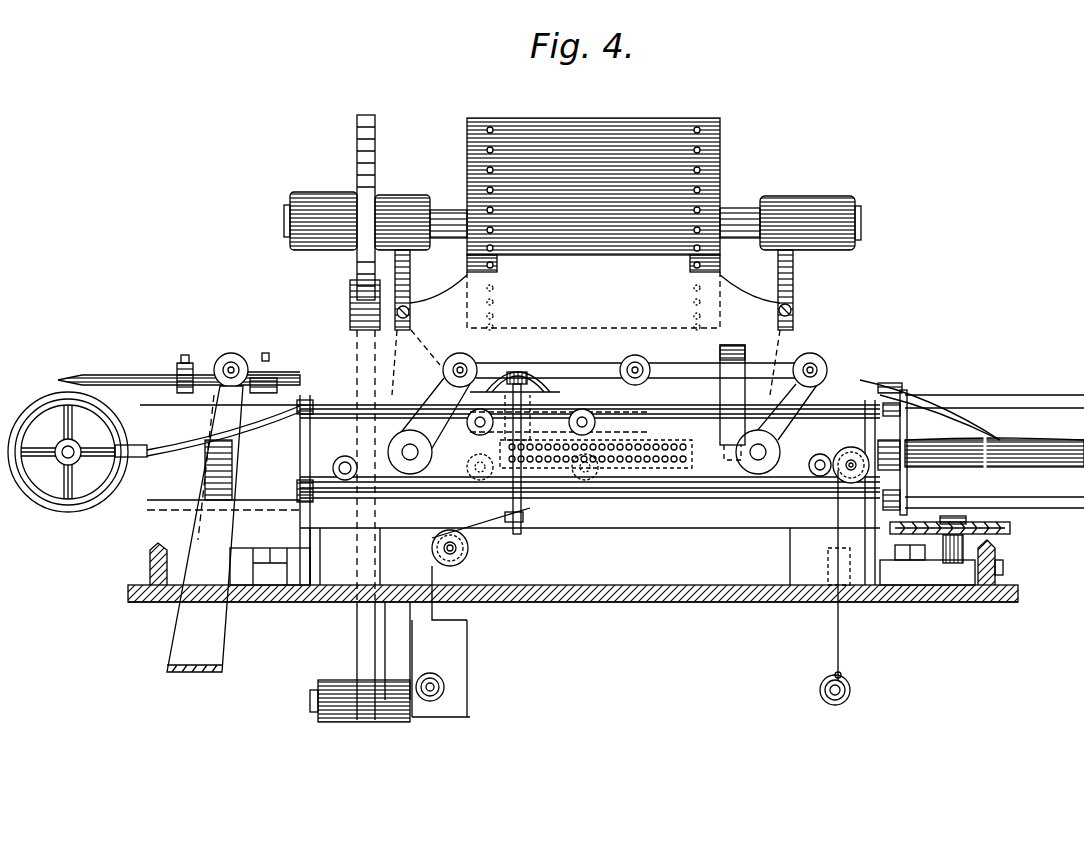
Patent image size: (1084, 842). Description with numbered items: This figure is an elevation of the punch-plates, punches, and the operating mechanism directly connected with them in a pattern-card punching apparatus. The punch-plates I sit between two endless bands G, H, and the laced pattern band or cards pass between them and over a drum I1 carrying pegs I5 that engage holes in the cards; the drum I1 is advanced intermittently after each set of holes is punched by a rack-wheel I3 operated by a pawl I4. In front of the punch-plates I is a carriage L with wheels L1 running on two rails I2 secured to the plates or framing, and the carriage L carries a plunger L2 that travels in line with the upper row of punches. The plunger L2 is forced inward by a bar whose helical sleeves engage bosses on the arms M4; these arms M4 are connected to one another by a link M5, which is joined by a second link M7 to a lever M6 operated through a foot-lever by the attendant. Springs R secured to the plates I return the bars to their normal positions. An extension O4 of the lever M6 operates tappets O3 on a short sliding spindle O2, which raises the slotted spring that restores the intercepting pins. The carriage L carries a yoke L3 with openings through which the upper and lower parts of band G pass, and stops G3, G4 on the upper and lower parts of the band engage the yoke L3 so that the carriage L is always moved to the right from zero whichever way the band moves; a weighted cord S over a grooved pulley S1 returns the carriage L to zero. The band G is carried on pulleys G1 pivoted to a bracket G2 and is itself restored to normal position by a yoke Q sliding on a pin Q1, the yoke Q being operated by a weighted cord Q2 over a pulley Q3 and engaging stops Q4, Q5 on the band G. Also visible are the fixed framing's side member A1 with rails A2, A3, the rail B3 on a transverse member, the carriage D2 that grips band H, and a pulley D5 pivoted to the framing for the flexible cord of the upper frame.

The drum I1 is at (610, 122).
The pegs I5 is at (490, 124).
The rack-wheel I3 is at (372, 160).
The pawl I4 is at (352, 342).
The springs R is at (432, 355).
The link M5 is at (685, 372).
The arms M4 is at (607, 413).
The stop G3 is at (522, 368).
The yoke L3 is at (540, 380).
The punch-plates I is at (586, 490).
The rails I2 is at (806, 494).
The carriage L is at (472, 430).
The wheels L1 is at (475, 508).
The plunger L2 is at (540, 470).
The sliding spindle O2 is at (128, 364).
The tappets O3 is at (193, 350).
The second link M7 is at (293, 370).
The lever M6 is at (205, 529).
The extension O4 is at (222, 425).
The bracket G2 is at (190, 450).
The pulleys G1 is at (66, 510).
The endless band G is at (975, 402).
The endless band H is at (170, 408).
The pin Q1 is at (994, 441).
The stop Q4 is at (890, 390).
The yoke Q is at (903, 480).
The stop Q5 is at (892, 494).
The pulley Q3 is at (851, 484).
The weighted cord Q2 is at (820, 587).
The side member A1 is at (128, 594).
The rail B3 is at (656, 602).
The rail A2 is at (150, 548).
The rail A3 is at (996, 550).
The pulley D5 is at (1010, 528).
The carriage D2 is at (895, 540).
The weighted cord S is at (428, 573).
The grooved pulley S1 is at (470, 570).
The stop G4 is at (508, 524).